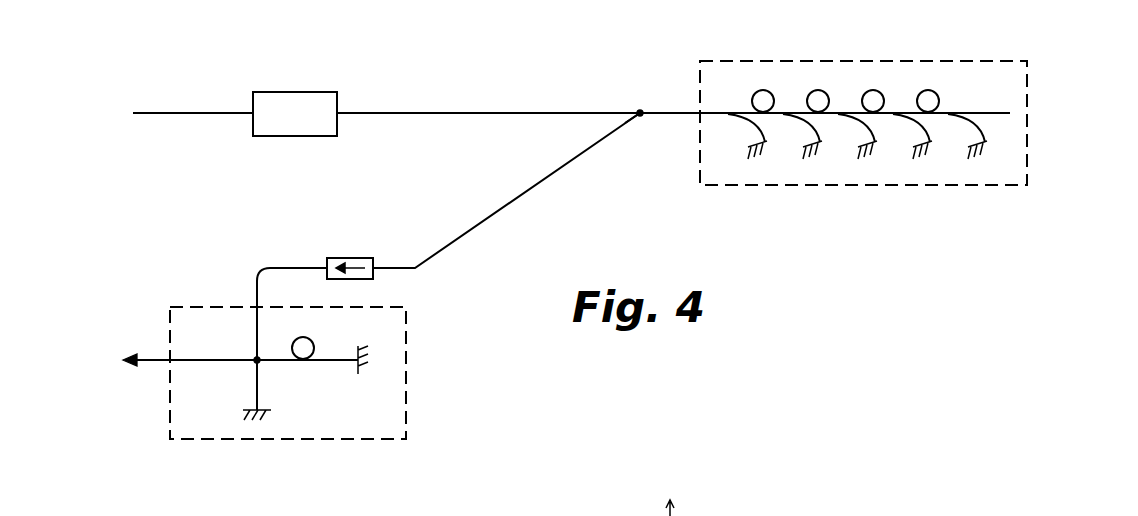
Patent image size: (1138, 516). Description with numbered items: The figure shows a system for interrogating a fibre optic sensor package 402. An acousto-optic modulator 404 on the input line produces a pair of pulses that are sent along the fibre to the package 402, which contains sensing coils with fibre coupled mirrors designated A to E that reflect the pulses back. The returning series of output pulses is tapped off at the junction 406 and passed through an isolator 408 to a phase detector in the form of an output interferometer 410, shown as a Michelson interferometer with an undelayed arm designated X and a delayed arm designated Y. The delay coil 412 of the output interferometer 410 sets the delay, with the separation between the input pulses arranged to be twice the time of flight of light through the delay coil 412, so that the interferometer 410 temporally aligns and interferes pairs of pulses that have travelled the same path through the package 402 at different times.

The package 402 is at (1028, 105).
The acousto-optic modulator 404 is at (310, 98).
The junction 406 is at (640, 110).
The isolator 408 is at (355, 258).
The output interferometer 410 is at (191, 305).
The delay coil 412 is at (314, 343).